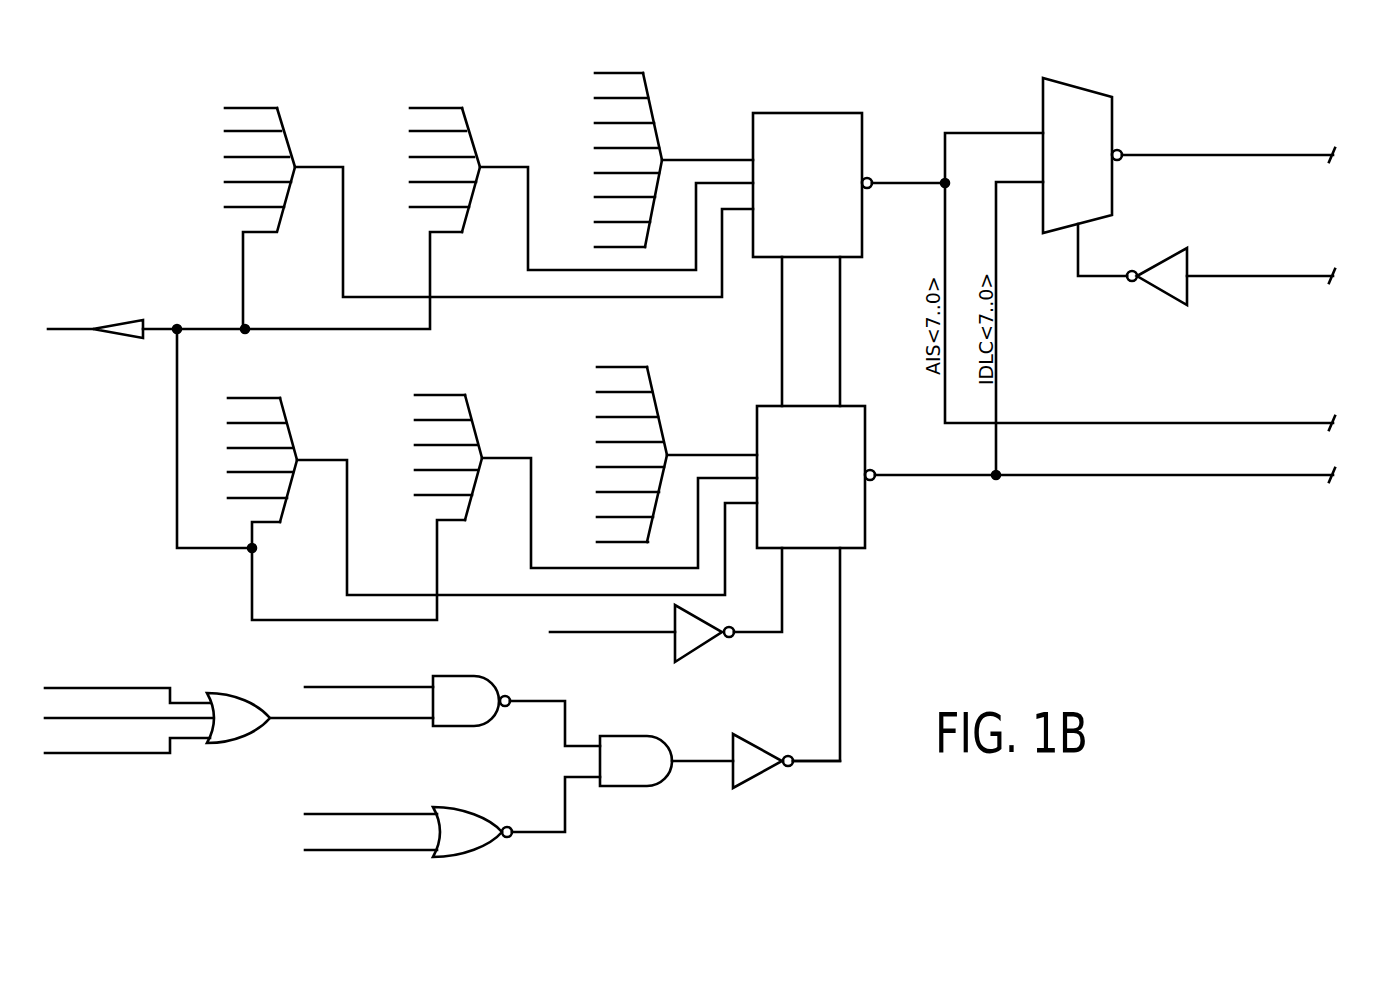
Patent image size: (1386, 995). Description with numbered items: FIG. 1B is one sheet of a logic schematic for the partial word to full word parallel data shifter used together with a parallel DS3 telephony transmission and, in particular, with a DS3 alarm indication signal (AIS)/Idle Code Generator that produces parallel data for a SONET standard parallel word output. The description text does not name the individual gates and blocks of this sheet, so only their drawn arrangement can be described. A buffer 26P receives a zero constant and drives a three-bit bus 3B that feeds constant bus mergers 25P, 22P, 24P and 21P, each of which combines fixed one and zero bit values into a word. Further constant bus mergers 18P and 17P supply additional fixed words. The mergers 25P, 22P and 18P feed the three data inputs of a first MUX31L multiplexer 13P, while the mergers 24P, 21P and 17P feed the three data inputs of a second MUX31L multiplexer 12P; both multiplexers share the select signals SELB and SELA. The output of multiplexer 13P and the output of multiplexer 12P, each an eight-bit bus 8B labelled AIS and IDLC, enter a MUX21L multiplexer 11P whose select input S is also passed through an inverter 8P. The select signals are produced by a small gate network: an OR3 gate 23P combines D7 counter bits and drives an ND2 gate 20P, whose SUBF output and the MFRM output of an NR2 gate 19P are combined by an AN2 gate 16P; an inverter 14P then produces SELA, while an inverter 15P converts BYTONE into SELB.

The buffer 3B zero input 26P is at (255, 390).
The 3-bit bus 3B is at (177, 423).
The constant bus merger 25P is at (489, 193).
The constant bus merger 22P is at (581, 163).
The constant bus merger 18P is at (674, 133).
The MUX31L multiplexer 13P is at (1044, 270).
The MUX21L multiplexer 11P is at (1187, 150).
The 8-bit bus 8B is at (1103, 281).
The inverter 2P 8P is at (1216, 264).
The constant bus merger 24P is at (492, 471).
The constant bus merger 21P is at (586, 456).
The constant bus merger 17P is at (677, 429).
The MUX31L multiplexer 12P is at (1030, 509).
The inverter 4X B41 15P is at (656, 645).
The OR3 gate 23P is at (239, 709).
The ND2 NAND gate 20P is at (452, 699).
The NR2 NOR gate 19P is at (452, 817).
The AN2 AND gate 16P is at (666, 750).
The inverter 3X B51 14P is at (786, 746).